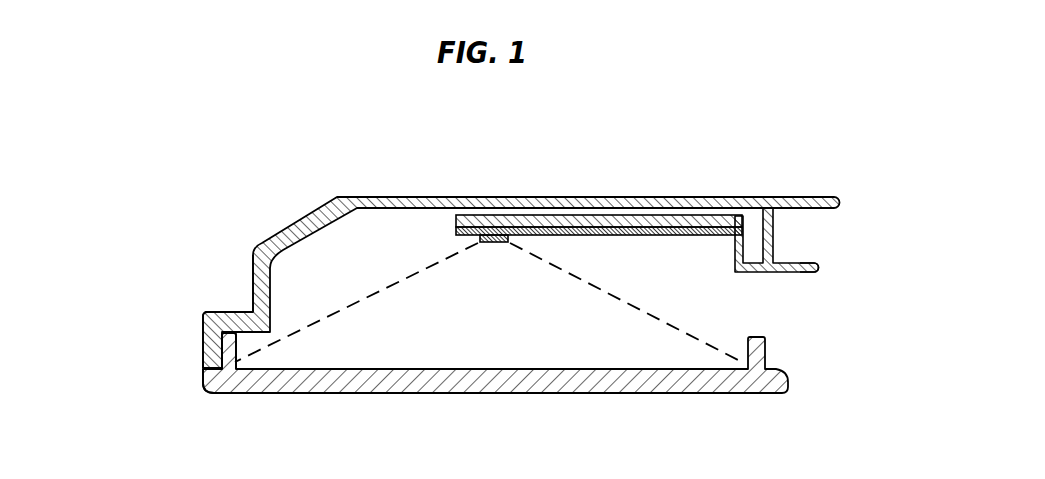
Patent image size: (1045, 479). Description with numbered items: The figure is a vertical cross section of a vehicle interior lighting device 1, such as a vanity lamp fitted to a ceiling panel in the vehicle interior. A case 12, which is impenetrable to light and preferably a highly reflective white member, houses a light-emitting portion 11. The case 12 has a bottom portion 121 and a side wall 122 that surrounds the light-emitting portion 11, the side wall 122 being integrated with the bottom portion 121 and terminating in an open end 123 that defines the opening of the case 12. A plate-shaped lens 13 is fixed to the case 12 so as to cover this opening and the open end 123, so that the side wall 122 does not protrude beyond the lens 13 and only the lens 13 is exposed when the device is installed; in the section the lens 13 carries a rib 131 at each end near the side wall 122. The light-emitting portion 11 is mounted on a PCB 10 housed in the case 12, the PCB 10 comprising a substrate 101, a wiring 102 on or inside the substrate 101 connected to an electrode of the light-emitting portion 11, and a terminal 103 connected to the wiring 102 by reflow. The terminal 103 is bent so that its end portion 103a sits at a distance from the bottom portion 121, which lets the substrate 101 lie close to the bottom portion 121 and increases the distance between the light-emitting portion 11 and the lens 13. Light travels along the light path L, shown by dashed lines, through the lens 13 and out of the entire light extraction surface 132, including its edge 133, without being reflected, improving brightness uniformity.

The vehicle interior lighting device 1 is at (702, 135).
The PCB 10 is at (585, 222).
The light-emitting portion 11 is at (485, 235).
The case 12 is at (290, 190).
The lens 13 is at (637, 395).
The substrate 101 is at (720, 221).
The wiring 102 is at (610, 231).
The terminal 103 is at (782, 273).
The end portion 103a is at (812, 264).
The bottom portion 121 is at (400, 212).
The side wall 122 is at (253, 278).
The open end 123 is at (203, 363).
The rib 131 is at (233, 352).
The light extraction surface 132 is at (364, 372).
The edge 133 is at (207, 382).
The light path L is at (383, 288).